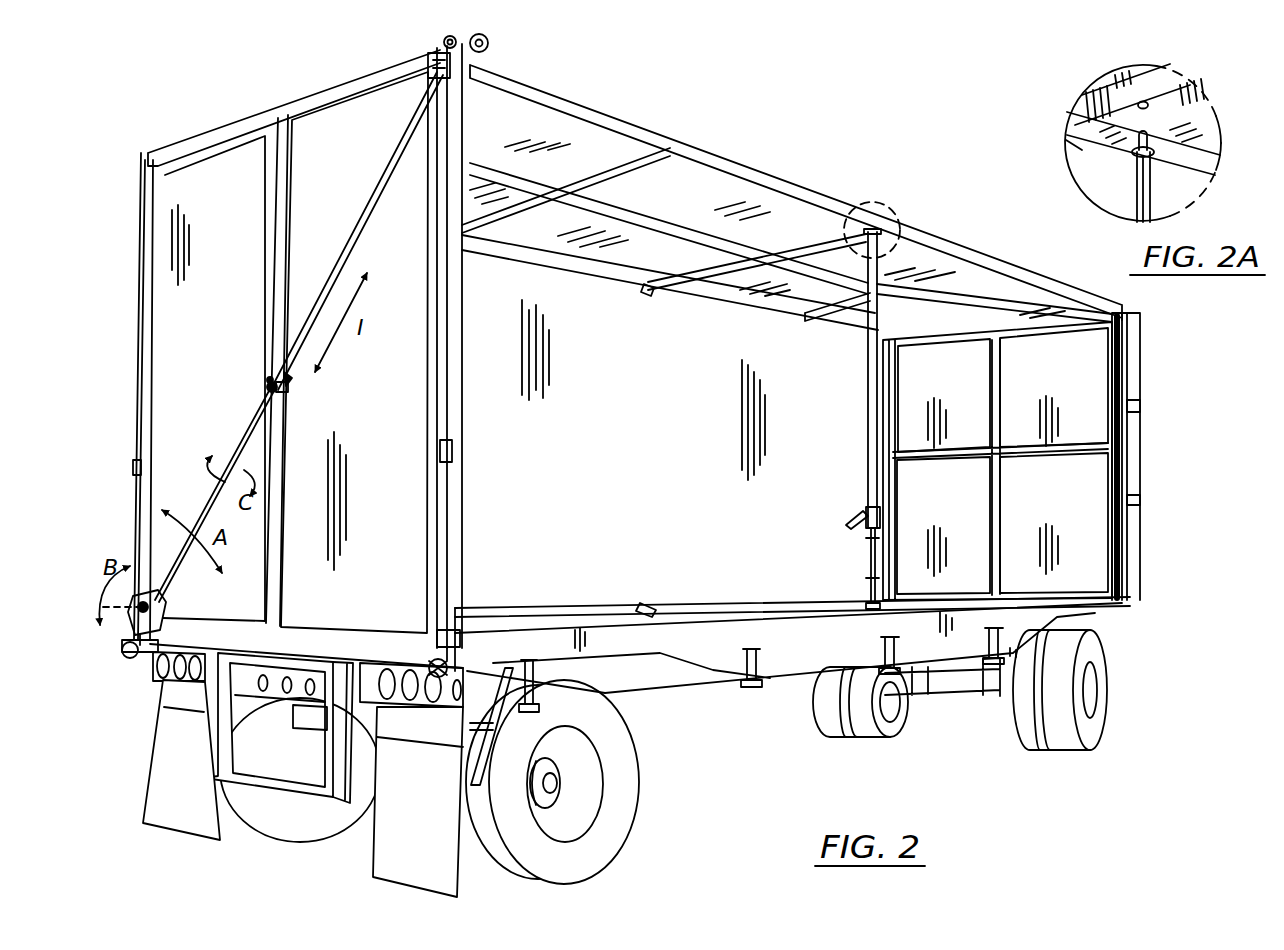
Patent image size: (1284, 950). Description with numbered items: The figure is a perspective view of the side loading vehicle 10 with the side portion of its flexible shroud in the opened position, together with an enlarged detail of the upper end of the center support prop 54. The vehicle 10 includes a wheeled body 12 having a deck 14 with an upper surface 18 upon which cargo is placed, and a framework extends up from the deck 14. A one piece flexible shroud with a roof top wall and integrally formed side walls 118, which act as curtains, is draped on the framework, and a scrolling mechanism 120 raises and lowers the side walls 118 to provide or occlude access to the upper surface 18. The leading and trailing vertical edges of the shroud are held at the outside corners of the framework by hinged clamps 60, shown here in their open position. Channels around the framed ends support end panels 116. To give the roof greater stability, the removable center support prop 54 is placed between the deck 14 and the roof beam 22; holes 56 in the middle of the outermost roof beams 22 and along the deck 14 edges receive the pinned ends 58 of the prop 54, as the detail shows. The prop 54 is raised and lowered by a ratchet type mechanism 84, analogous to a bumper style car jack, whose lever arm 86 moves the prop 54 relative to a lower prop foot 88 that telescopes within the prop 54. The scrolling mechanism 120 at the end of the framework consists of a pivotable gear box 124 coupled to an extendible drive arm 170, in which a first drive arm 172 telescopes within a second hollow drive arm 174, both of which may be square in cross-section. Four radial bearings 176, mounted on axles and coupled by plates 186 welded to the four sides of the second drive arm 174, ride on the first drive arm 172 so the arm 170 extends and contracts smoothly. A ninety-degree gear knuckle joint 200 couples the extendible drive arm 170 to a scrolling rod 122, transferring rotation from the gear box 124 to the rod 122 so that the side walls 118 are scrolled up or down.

In FIG. 2, the side loading vehicle 10 is at (857, 131).
In FIG. 2, the wheeled body 12 is at (740, 704).
In FIG. 2, the deck 14 is at (826, 660).
In FIG. 2, the upper surface 18 is at (578, 620).
In FIG. 2, the roof beam 22 is at (593, 267).
In FIG. 2A, the roof beam 22 is at (1210, 135).
In FIG. 2, the center support prop 54 is at (866, 434).
In FIG. 2A, the center support prop 54 is at (1150, 206).
In FIG. 2, the holes 56 is at (650, 292).
In FIG. 2A, the holes 56 is at (1150, 104).
In FIG. 2A, the pinned ends 58 is at (1066, 145).
In FIG. 2, the hinged clamp 60 is at (640, 104).
In FIG. 2, the ratchet type mechanism 84 is at (866, 530).
In FIG. 2, the lever arm 86 is at (848, 518).
In FIG. 2, the lower prop foot 88 is at (868, 578).
In FIG. 2, the panels 116 is at (222, 204).
In FIG. 2, the side walls 118 is at (675, 440).
In FIG. 2, the scrolling mechanism 120 is at (262, 325).
In FIG. 2, the scrolling rod 122 is at (489, 43).
In FIG. 2, the pivotable gear box 124 is at (168, 612).
In FIG. 2, the extendible drive arm 170 is at (258, 424).
In FIG. 2, the first drive arm 172 is at (214, 498).
In FIG. 2, the second drive arm 174 is at (368, 206).
In FIG. 2, the radial bearings 176 is at (266, 389).
In FIG. 2, the plates 186 is at (268, 380).
In FIG. 2, the 90° gear knuckle joint 200 is at (428, 53).